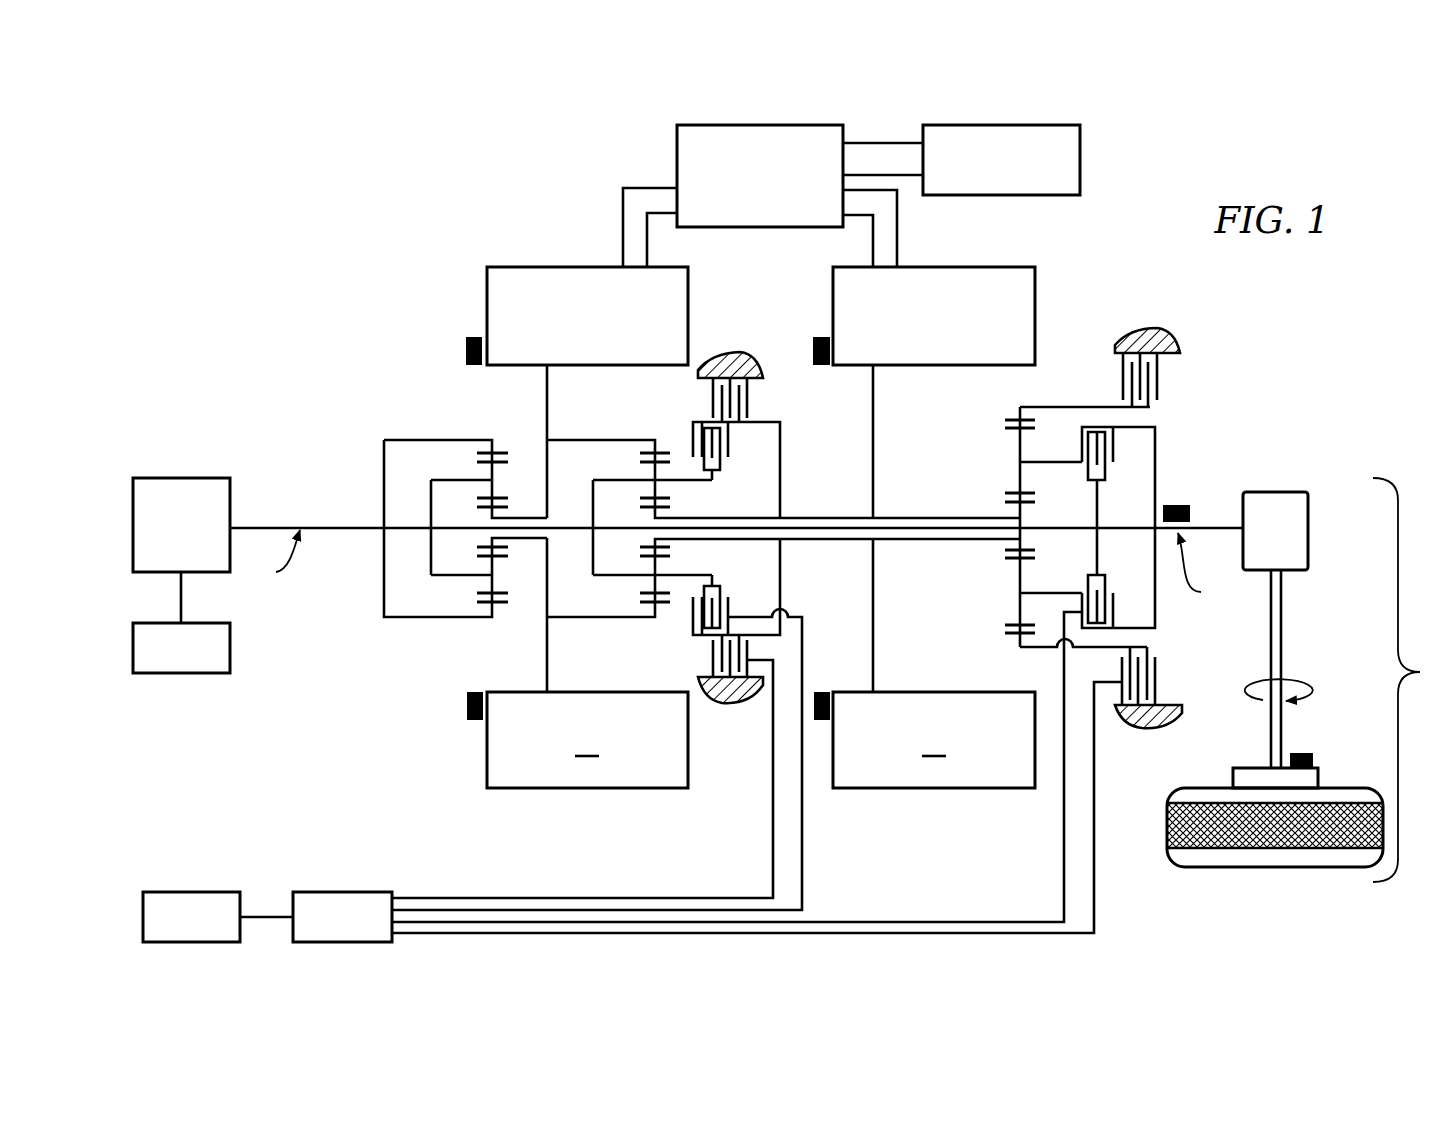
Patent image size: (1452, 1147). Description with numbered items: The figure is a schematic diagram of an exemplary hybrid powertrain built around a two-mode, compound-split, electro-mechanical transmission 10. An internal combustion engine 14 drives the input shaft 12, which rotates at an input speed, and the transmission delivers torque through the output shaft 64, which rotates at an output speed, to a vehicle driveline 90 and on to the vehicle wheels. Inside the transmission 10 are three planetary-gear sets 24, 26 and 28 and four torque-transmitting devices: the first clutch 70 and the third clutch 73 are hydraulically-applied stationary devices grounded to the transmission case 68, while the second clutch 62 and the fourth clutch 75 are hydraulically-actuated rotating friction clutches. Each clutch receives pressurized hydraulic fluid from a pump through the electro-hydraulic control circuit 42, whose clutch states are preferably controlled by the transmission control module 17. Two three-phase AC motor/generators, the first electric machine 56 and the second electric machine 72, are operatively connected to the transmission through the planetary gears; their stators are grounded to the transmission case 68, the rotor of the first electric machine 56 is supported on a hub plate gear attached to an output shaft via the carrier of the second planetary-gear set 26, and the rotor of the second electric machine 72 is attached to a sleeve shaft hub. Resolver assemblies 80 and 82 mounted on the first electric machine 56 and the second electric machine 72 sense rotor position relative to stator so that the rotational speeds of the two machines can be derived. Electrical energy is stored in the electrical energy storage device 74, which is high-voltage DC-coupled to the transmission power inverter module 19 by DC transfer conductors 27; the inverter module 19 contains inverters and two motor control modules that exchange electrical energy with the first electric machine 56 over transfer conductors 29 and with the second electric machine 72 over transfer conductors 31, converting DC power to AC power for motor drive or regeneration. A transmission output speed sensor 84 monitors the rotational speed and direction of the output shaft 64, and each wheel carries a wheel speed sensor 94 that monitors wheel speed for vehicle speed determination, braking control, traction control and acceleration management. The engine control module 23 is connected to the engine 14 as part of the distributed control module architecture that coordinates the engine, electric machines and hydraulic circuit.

The transmission 10 is at (449, 231).
The input shaft 12 is at (343, 520).
The engine 14 is at (185, 478).
The transmission control module 17 is at (182, 892).
The transmission power inverter module 19 is at (677, 142).
The engine control module 23 is at (228, 665).
The planetary-gear set 24 is at (482, 436).
The planetary-gear set 26 is at (648, 436).
The DC transfer conductors 27 is at (861, 142).
The planetary-gear set 28 is at (1008, 407).
The transfer conductors 29 is at (623, 227).
The transfer conductors 31 is at (898, 222).
The hydraulic control circuit 42 is at (310, 892).
The first electric machine MG-A 56 is at (487, 302).
The clutch C2 62 is at (1124, 467).
The output shaft 64 is at (1212, 527).
The transmission case 68 is at (732, 362).
The clutch C1 70 is at (1113, 375).
The second electric machine MG-B 72 is at (1038, 284).
The clutch C3 73 is at (754, 402).
The electrical energy storage device 74 is at (1082, 147).
The clutch C4 75 is at (733, 453).
The resolver assembly 80 is at (465, 349).
The resolver assembly 82 is at (823, 336).
The transmission output speed sensor 84 is at (1176, 505).
The vehicle driveline 90 is at (1420, 672).
The wheel speed sensor 94 is at (1302, 752).